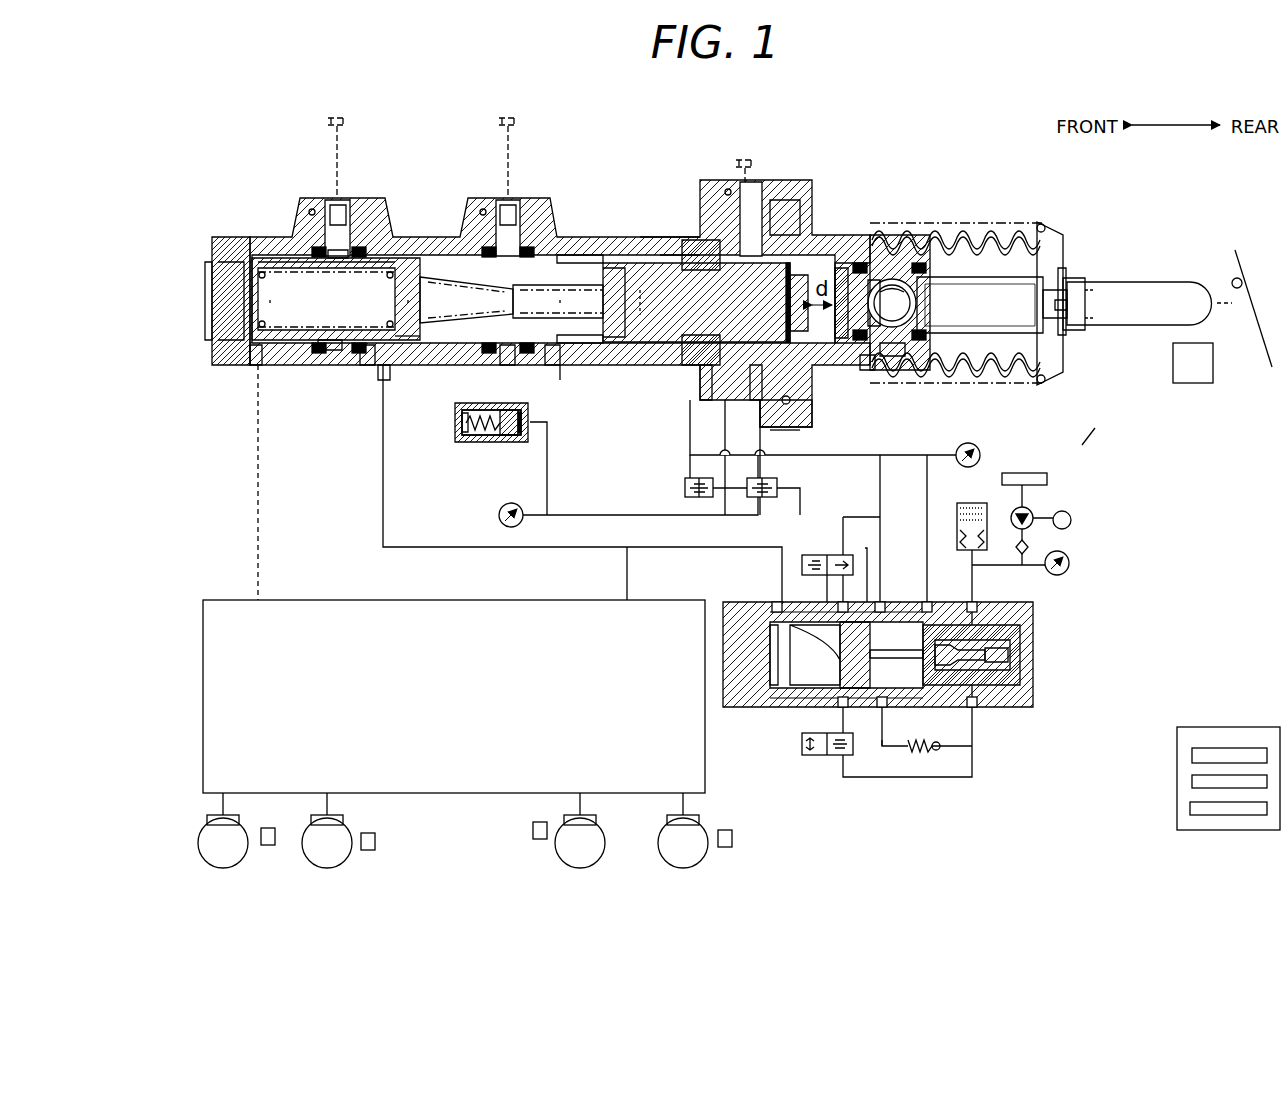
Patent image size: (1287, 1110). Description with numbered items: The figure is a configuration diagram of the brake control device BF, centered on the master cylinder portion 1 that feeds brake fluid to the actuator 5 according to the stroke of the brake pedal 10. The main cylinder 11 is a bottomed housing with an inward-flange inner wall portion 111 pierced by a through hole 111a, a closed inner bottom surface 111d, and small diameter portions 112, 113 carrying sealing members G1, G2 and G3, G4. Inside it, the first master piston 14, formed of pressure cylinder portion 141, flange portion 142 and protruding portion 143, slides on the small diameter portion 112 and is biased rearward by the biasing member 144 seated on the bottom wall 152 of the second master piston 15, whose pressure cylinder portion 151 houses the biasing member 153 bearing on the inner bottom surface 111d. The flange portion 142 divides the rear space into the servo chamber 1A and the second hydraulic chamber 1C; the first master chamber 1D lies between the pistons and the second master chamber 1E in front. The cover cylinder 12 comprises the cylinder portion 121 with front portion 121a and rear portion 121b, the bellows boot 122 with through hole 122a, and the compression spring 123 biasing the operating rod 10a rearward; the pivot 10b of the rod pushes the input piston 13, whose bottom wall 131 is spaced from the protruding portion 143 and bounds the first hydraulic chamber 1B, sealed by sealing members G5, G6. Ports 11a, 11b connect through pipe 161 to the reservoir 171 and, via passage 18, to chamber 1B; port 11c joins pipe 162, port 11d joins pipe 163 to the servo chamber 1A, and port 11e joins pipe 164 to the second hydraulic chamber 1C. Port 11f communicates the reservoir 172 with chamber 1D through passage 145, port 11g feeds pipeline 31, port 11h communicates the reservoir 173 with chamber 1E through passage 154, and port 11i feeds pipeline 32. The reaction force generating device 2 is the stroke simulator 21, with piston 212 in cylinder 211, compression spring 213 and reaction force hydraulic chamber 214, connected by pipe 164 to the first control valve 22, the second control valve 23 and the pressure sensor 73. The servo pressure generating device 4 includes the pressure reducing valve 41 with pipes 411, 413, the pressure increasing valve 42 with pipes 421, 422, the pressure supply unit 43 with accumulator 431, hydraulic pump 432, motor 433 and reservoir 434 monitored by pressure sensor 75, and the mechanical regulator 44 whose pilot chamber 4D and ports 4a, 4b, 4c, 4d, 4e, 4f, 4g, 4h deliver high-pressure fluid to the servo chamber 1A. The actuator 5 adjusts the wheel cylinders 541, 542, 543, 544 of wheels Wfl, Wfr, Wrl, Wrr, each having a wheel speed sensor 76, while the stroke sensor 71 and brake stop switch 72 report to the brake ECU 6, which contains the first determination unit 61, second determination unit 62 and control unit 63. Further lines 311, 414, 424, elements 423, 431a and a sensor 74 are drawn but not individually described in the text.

The brake control device BF is at (192, 147).
The master cylinder portion 1 is at (202, 250).
The main cylinder 11 is at (240, 236).
The inner wall portion 111 is at (690, 253).
The through hole 111a is at (660, 236).
The inner bottom surface 111d is at (215, 340).
The port 11a is at (755, 375).
The port 11b is at (772, 233).
The port 11c is at (705, 375).
The port 11d is at (680, 350).
The port 11e is at (550, 348).
The port 11f is at (502, 215).
The port 11g is at (383, 385).
The port 11h is at (345, 215).
The port 11i is at (250, 357).
The small diameter portion 112 is at (505, 348).
The small diameter portion 113 is at (367, 350).
The cover cylinder 12 is at (1096, 440).
The cylinder portion 121 is at (985, 448).
The front portion 121a is at (866, 368).
The rear portion 121b is at (893, 357).
The boot 122 is at (1045, 375).
The through hole 122a is at (1063, 265).
The compression spring 123 is at (1057, 370).
The input piston 13 is at (895, 300).
The bottom wall 131 is at (900, 265).
The first master piston 14 is at (610, 340).
The pressure cylinder portion 141 is at (578, 262).
The flange portion 142 is at (618, 268).
The protruding portion 143 is at (800, 265).
The biasing member 144 is at (440, 280).
The passage 145 is at (455, 290).
The second master piston 15 is at (400, 268).
The pressure cylinder portion 151 is at (330, 350).
The bottom wall 152 is at (395, 345).
The biasing member 153 is at (262, 265).
The passage 154 is at (335, 248).
The pipe 161 is at (795, 428).
The pipe 162 is at (722, 440).
The pipe 163 is at (688, 425).
The pipe 164 is at (562, 370).
The reservoir 171 is at (745, 160).
The reservoir 172 is at (508, 146).
The reservoir 173 is at (337, 146).
The passage 18 is at (872, 268).
The servo chamber 1A is at (660, 345).
The first hydraulic chamber 1B is at (845, 330).
The second hydraulic chamber 1C is at (570, 333).
The first master chamber 1D is at (418, 350).
The second master chamber 1E is at (272, 358).
The sealing member G1 is at (525, 246).
The sealing member G2 is at (488, 246).
The sealing member G3 is at (362, 246).
The sealing member G4 is at (316, 246).
The sealing member G5 is at (862, 262).
The sealing member G6 is at (920, 262).
The brake pedal 10 is at (1240, 275).
The operating rod 10a is at (1015, 300).
The pivot 10b is at (985, 285).
The stroke sensor 71 is at (1193, 385).
The brake stop switch 72 is at (1232, 280).
The reaction force generating device 2 is at (472, 493).
The stroke simulator 21 is at (470, 403).
The cylinder 211 is at (493, 405).
The piston 212 is at (493, 440).
The compression spring 213 is at (465, 437).
The reaction force hydraulic chamber 214 is at (512, 437).
The first control valve 22 is at (696, 478).
The second control valve 23 is at (756, 478).
The pipeline 31 is at (380, 490).
The pipeline 32 is at (255, 492).
The pipe 311 is at (705, 547).
The servo pressure generating device 4 is at (1045, 625).
The pressure reducing valve 41 is at (812, 555).
The pipe 411 is at (847, 517).
The pipe 413 is at (838, 597).
The pipe 414 is at (882, 530).
The pressure increasing valve 42 is at (800, 750).
The pipe 421 is at (838, 721).
The pipe 422 is at (868, 778).
The relief valve 423 is at (922, 750).
The pipe 424 is at (880, 746).
The pressure supply unit 43 is at (1105, 512).
The accumulator 431 is at (962, 548).
The pipe 431a is at (990, 567).
The hydraulic pump 432 is at (1010, 515).
The motor 433 is at (1072, 515).
The reservoir 434 is at (1048, 479).
The regulator 44 is at (1022, 655).
The port 4a is at (975, 607).
The port 4b is at (974, 706).
The port 4c is at (928, 605).
The port 4d is at (885, 605).
The port 4e is at (888, 706).
The port 4f is at (850, 606).
The port 4g is at (848, 706).
The port 4h is at (775, 603).
The pilot chamber 4D is at (778, 660).
The actuator 5 is at (235, 597).
The wheel cylinder 541 is at (240, 815).
The wheel cylinder 542 is at (340, 815).
The wheel cylinder 543 is at (592, 815).
The wheel cylinder 544 is at (720, 815).
The front left wheel Wfl is at (235, 865).
The front right wheel Wfr is at (337, 866).
The rear left wheel Wrl is at (570, 858).
The rear right wheel Wrr is at (698, 860).
The brake ECU 6 is at (1180, 727).
The first determination unit 61 is at (1197, 752).
The second determination unit 62 is at (1197, 779).
The control unit 63 is at (1197, 806).
The pressure sensor 73 is at (518, 505).
The sensor 74 is at (960, 462).
The pressure sensor 75 is at (1066, 573).
The wheel speed sensor 76 is at (275, 845).